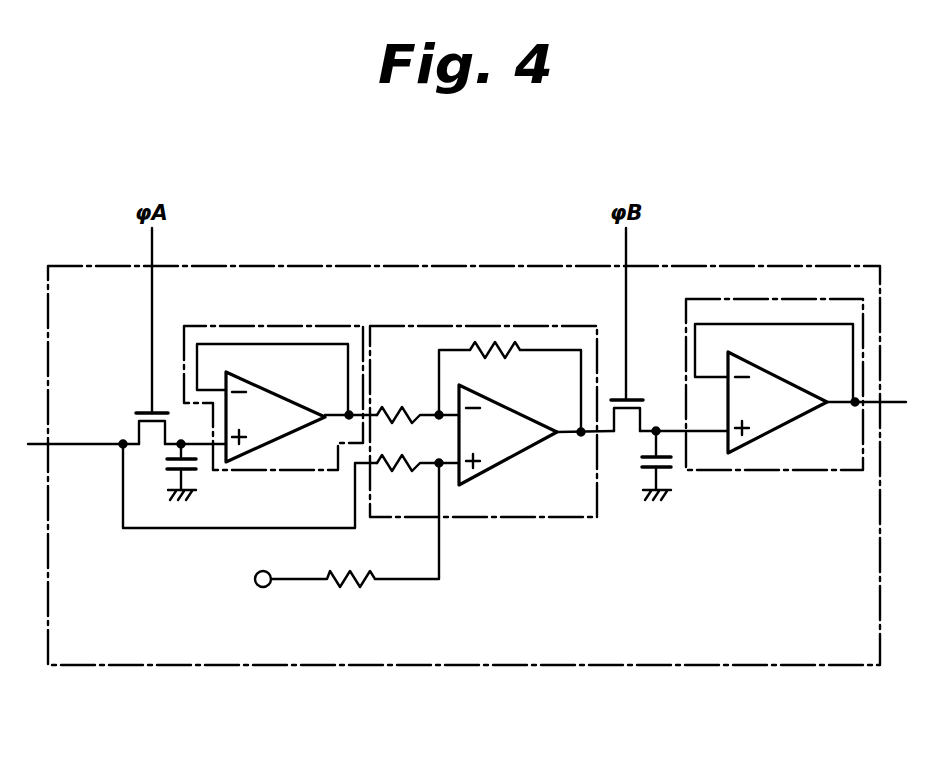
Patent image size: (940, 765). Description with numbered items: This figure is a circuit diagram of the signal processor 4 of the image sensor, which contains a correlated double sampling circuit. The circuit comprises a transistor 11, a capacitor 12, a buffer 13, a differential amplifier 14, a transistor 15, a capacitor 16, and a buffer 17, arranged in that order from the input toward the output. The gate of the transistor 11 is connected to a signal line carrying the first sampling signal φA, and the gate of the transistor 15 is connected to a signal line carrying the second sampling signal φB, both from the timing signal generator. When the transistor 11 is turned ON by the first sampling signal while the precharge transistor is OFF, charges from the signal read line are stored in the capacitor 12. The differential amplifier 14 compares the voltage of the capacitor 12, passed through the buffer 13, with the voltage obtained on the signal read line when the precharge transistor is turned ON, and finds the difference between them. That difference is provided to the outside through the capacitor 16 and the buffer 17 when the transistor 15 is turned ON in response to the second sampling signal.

The signal processor 4 is at (667, 668).
The transistor 11 is at (148, 409).
The capacitor 12 is at (166, 464).
The buffer 13 is at (276, 326).
The differential amplifier 14 is at (465, 326).
The transistor 15 is at (632, 398).
The capacitor 16 is at (640, 466).
The buffer 17 is at (776, 300).